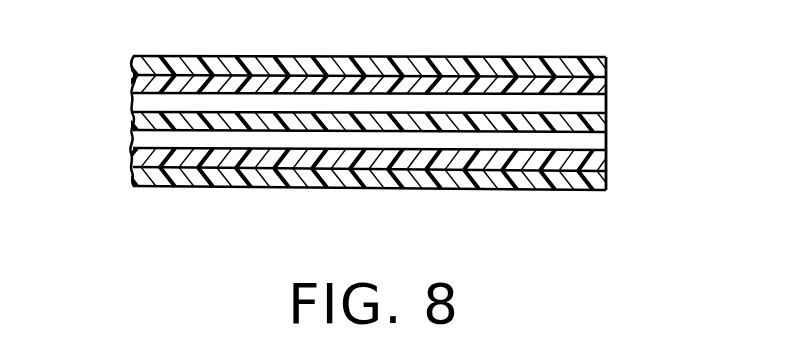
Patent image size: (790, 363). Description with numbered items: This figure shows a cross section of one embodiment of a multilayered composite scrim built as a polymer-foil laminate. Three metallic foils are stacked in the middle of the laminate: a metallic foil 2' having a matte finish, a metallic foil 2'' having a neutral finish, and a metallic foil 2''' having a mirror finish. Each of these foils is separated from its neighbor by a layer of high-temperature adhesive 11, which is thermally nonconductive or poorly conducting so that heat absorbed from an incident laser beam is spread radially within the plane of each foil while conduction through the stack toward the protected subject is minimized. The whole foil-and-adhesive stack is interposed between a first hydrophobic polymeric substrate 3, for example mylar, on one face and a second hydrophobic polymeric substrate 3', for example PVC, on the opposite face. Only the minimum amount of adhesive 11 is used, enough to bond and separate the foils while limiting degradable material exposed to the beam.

The high-temperature adhesive 11 is at (147, 138).
The second hydrophobic polymeric substrate 3' is at (393, 47).
The metallic foil having a matte finish 2' is at (394, 80).
The metallic foil having a neutral finish 2'' is at (399, 123).
The metallic foil having a mirror finish 2''' is at (404, 163).
The first hydrophobic polymeric substrate 3 is at (388, 200).